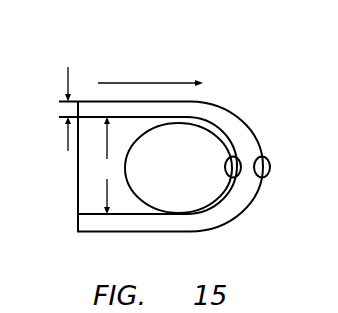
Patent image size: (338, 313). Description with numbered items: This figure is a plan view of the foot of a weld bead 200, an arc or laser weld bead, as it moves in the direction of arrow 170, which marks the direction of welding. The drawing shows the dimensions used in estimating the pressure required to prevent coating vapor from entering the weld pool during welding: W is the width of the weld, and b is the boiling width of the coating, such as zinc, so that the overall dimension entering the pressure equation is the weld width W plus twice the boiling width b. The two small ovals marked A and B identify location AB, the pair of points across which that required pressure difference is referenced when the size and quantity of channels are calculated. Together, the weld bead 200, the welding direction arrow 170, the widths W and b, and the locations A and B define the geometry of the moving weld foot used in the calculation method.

The arrow 170 is at (143, 83).
The weld bead 200 is at (135, 197).
The location A is at (233, 180).
The location B is at (263, 180).
The boiling width of the coating b is at (58, 109).
The width of the weld W is at (108, 165).